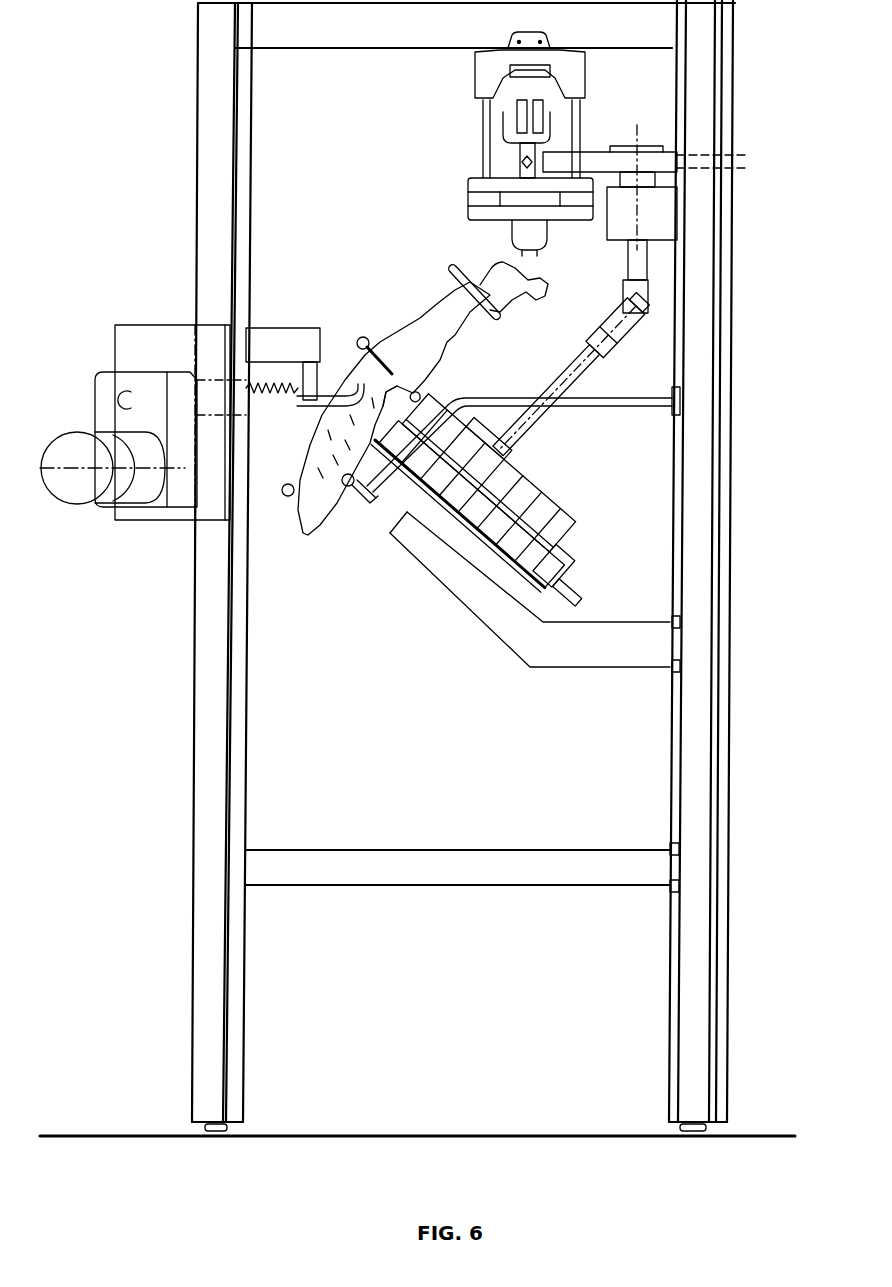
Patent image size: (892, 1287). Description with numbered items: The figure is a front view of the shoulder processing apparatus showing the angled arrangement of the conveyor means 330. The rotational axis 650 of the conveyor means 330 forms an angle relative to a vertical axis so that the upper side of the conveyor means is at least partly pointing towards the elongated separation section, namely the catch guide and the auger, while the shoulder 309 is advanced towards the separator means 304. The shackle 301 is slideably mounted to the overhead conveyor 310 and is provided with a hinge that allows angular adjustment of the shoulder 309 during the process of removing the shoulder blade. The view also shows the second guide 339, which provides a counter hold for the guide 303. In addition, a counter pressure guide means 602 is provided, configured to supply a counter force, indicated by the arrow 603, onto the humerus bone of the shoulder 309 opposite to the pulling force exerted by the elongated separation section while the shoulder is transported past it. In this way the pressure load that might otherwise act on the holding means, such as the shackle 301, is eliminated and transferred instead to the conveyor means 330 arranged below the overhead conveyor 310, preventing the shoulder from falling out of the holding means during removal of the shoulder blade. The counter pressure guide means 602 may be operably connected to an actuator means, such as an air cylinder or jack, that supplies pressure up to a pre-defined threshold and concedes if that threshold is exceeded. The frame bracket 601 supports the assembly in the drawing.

The shackle 301 is at (475, 287).
The guide 303 is at (288, 497).
The separator means 304 is at (317, 316).
The shoulder 309 is at (437, 315).
The overhead conveyor 310 is at (457, 153).
The conveyor means 330 is at (520, 498).
The second guide 339 is at (348, 487).
The frame bracket 601 is at (640, 622).
The counter pressure guide means 602 is at (361, 337).
The arrow 603 is at (395, 381).
The rotational axis 650 is at (431, 535).